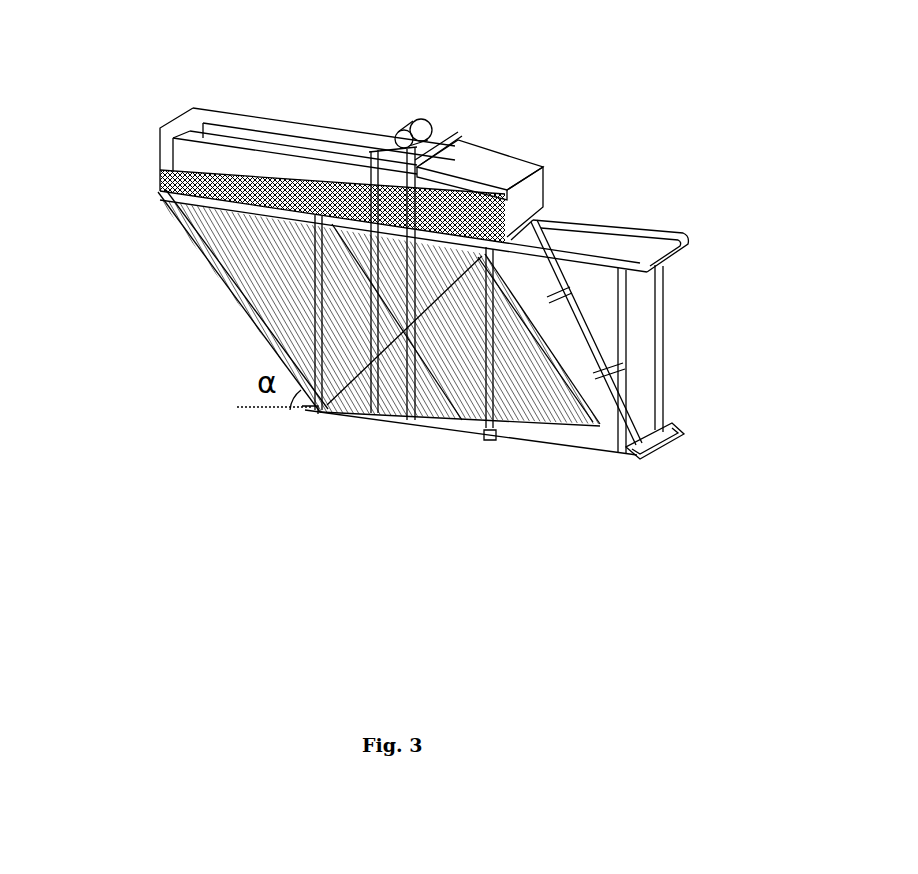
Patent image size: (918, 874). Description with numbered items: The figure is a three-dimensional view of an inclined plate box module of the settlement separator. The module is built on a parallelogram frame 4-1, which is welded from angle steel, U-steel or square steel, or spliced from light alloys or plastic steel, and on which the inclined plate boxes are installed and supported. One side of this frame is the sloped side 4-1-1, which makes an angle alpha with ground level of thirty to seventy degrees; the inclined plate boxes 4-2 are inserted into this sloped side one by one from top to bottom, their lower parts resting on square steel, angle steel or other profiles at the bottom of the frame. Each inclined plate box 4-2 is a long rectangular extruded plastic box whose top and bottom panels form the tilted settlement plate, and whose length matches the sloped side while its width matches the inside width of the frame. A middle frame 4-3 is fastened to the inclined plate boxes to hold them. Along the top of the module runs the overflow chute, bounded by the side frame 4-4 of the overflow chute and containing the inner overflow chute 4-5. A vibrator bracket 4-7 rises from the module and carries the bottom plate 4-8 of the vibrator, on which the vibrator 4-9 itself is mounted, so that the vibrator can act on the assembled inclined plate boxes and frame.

The parallelogram frame 4-1 is at (598, 224).
The sloped side of the parallelogram frame 4-1-1 is at (212, 260).
The inclined plate box 4-2 is at (243, 182).
The middle frame 4-3 is at (458, 407).
The side frame of overflow chute 4-4 is at (275, 117).
The inner overflow chute 4-5 is at (215, 140).
The vibrator bracket 4-7 is at (350, 392).
The bottom plate of the vibrator 4-8 is at (443, 133).
The vibrator 4-9 is at (425, 117).